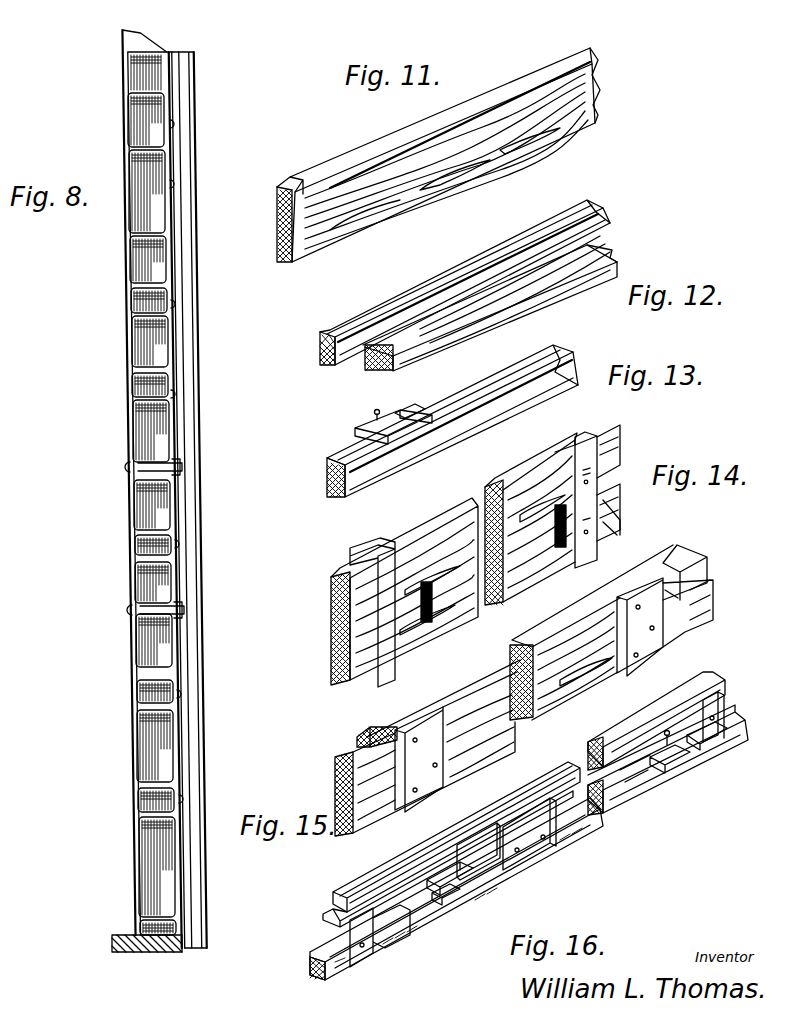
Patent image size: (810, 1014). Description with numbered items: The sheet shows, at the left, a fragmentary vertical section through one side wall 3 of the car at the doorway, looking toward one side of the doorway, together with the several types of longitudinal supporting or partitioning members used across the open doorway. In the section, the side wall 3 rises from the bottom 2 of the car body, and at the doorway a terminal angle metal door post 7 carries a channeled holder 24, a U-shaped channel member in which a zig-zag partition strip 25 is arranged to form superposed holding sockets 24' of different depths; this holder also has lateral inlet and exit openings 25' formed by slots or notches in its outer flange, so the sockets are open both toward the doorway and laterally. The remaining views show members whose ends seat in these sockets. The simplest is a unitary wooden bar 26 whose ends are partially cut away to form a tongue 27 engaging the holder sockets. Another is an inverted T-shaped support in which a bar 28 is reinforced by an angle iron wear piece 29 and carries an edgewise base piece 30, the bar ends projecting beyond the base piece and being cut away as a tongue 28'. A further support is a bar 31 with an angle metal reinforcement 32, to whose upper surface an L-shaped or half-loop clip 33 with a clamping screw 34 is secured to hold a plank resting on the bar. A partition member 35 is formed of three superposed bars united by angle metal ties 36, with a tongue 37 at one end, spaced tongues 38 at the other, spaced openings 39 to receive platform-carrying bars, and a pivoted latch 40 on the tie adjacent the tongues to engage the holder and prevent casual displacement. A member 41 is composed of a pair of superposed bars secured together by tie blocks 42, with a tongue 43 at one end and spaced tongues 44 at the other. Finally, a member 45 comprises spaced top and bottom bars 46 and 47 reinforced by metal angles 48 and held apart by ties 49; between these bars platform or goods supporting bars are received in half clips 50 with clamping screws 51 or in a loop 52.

In FIG. 8, the bottom 2 is at (161, 952).
In FIG. 8, the side wall 3 is at (156, 483).
In FIG. 8, the terminal angle metal door post 7 is at (196, 63).
In FIG. 8, the channeled holder 24 is at (119, 273).
In FIG. 8, the holding socket 24' is at (183, 277).
In FIG. 8, the zig-zag partition strip 25 is at (162, 570).
In FIG. 8, the lateral inlet and exit opening 25' is at (187, 598).
In FIG. 11, the bar 26 is at (473, 155).
In FIG. 11, the tongue 27 is at (278, 228).
In FIG. 12, the bar 28 is at (304, 348).
In FIG. 12, the tongue 28' is at (373, 372).
In FIG. 12, the angle iron wear piece 29 is at (340, 335).
In FIG. 12, the base piece 30 is at (500, 307).
In FIG. 13, the bar 31 is at (332, 483).
In FIG. 13, the angle metal reinforcement 32 is at (340, 455).
In FIG. 13, the L-shaped or half-loop clip 33 is at (358, 432).
In FIG. 13, the clamping screw 34 is at (372, 414).
In FIG. 14, the partition or supporting member 35 is at (503, 488).
In FIG. 14, the angle metal tie 36 is at (392, 647).
In FIG. 14, the tongue 37 is at (331, 632).
In FIG. 14, the spaced tongue 38 is at (612, 452).
In FIG. 14, the opening 39 is at (434, 600).
In FIG. 14, the pivoted latch 40 is at (614, 522).
In FIG. 15, the supporting or partitioning member 41 is at (590, 675).
In FIG. 15, the tie block 42 is at (642, 600).
In FIG. 15, the tongue 43 is at (335, 778).
In FIG. 15, the spaced tongue 44 is at (690, 580).
In FIG. 16, the supporting or partitioning member 45 is at (418, 848).
In FIG. 15, the top bar 46 is at (405, 722).
In FIG. 16, the bottom bar 47 is at (309, 967).
In FIG. 16, the metal angle 48 is at (546, 866).
In FIG. 16, the tie 49 is at (348, 928).
In FIG. 16, the half clip 50 is at (470, 890).
In FIG. 16, the clamping screw 51 is at (445, 905).
In FIG. 16, the loop 52 is at (467, 855).